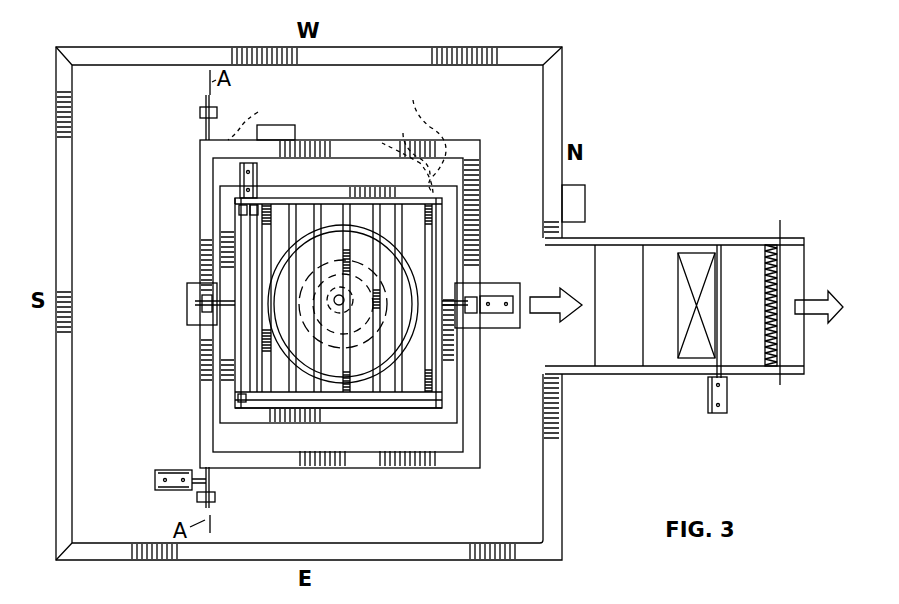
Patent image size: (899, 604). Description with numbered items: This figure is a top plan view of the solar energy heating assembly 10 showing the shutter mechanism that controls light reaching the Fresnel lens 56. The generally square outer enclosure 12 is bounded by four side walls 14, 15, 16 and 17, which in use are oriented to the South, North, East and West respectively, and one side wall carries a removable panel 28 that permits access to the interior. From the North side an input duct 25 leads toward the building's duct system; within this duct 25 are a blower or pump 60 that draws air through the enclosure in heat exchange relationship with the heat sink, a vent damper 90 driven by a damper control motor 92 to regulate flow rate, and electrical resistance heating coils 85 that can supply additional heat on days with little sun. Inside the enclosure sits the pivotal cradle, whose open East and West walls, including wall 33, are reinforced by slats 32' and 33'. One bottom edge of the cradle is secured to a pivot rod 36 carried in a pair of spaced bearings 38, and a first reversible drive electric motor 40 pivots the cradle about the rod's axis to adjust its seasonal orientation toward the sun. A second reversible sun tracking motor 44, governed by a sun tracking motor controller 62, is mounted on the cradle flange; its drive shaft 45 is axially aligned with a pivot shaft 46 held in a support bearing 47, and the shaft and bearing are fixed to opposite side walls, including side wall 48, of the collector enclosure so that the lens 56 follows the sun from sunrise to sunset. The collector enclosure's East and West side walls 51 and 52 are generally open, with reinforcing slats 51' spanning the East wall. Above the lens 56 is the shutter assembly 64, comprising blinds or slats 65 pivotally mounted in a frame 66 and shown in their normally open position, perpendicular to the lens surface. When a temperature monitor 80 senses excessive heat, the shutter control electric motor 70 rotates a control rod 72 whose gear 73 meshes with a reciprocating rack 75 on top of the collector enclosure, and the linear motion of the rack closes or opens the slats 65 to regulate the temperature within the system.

The solar energy heating assembly 10 is at (172, 563).
The outer enclosure 12 is at (488, 560).
The side wall 14 is at (57, 440).
The side wall 15 is at (562, 482).
The side wall 16 is at (220, 562).
The side wall 17 is at (440, 47).
The input duct 25 is at (660, 237).
The removable panel 28 is at (372, 470).
The reinforcing slats 32' is at (430, 490).
The side wall 33 is at (355, 105).
The reinforcing slats 33' is at (337, 136).
The pivot bar or rod 36 is at (217, 117).
The bearings 38 is at (200, 112).
The first reversible drive electric motor 40 is at (163, 470).
The second reversible drive electrical sun tracking motor 44 is at (497, 317).
The drive shaft 45 is at (462, 312).
The pivot shaft 46 is at (210, 296).
The support bearing 47 is at (192, 318).
The side wall 48 is at (240, 335).
The side wall 51 is at (300, 325).
The reinforcing slats 51' is at (442, 430).
The side wall 52 is at (407, 154).
The Fresnel lens 56 is at (350, 222).
The blower or pump 60 is at (623, 353).
The sun tracking motor controller 62 is at (585, 205).
The shutter assembly 64 is at (320, 198).
The blinds or slats 65 is at (294, 200).
The frame 66 is at (360, 398).
The shutter control electric motor 70 is at (232, 180).
The control rod 72 is at (243, 223).
The gear 73 is at (233, 398).
The reciprocating rack 75 is at (273, 398).
The temperature monitor 80 is at (285, 125).
The electrical resistance heating wires or coils 85 is at (772, 362).
The vent damper 90 is at (700, 353).
The damper control motor 92 is at (722, 413).